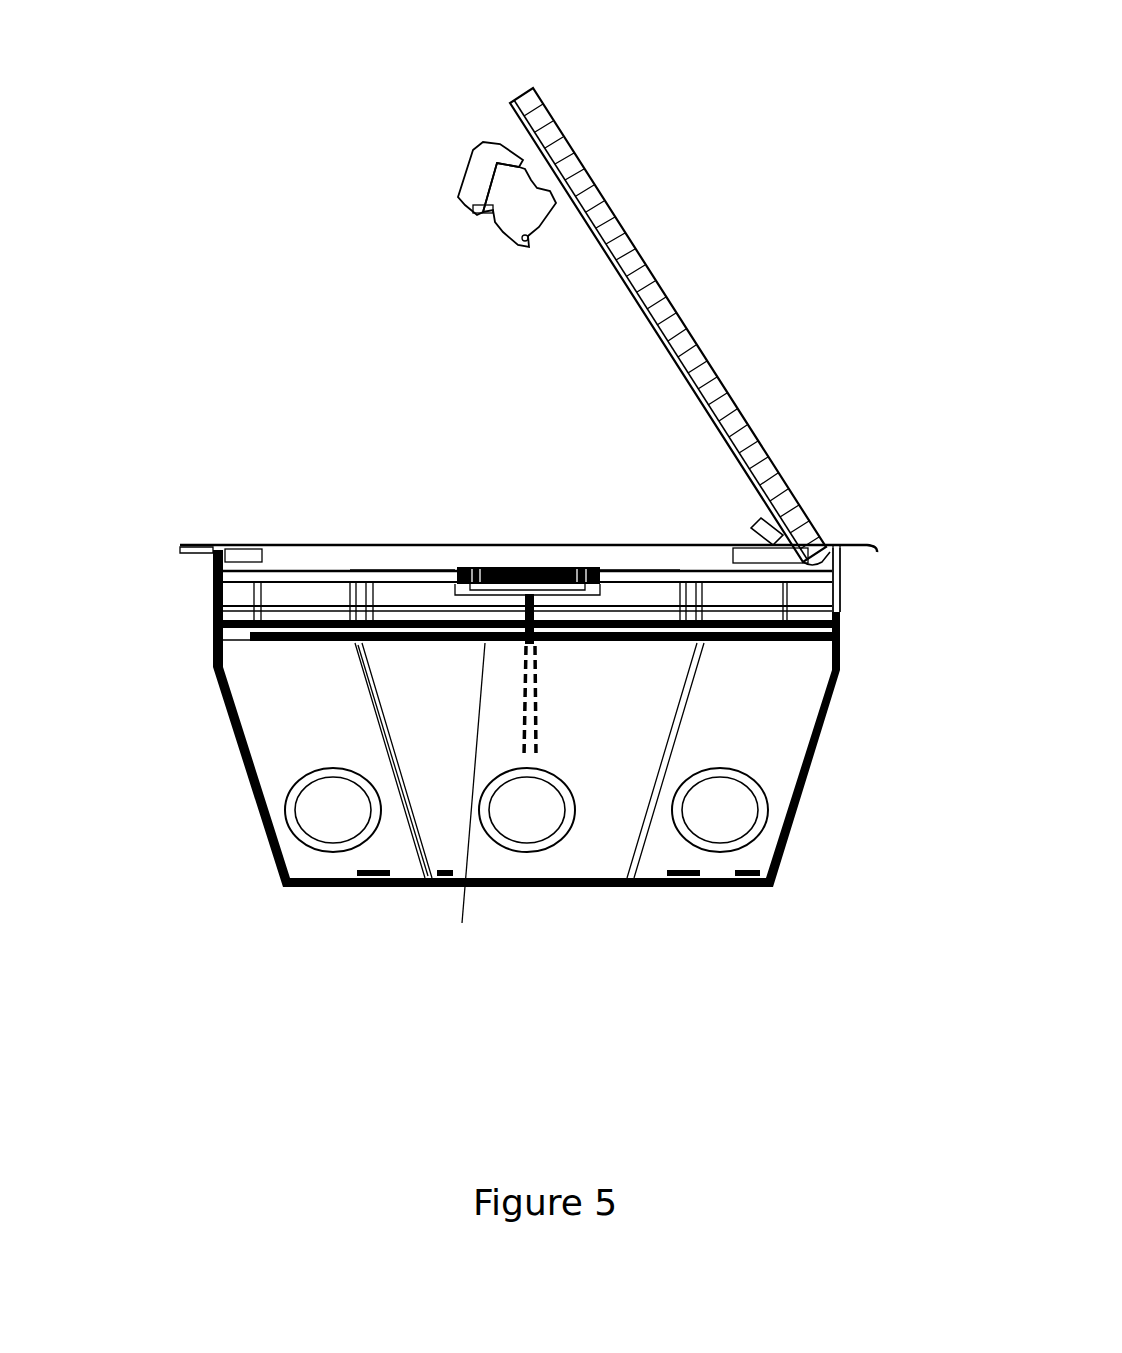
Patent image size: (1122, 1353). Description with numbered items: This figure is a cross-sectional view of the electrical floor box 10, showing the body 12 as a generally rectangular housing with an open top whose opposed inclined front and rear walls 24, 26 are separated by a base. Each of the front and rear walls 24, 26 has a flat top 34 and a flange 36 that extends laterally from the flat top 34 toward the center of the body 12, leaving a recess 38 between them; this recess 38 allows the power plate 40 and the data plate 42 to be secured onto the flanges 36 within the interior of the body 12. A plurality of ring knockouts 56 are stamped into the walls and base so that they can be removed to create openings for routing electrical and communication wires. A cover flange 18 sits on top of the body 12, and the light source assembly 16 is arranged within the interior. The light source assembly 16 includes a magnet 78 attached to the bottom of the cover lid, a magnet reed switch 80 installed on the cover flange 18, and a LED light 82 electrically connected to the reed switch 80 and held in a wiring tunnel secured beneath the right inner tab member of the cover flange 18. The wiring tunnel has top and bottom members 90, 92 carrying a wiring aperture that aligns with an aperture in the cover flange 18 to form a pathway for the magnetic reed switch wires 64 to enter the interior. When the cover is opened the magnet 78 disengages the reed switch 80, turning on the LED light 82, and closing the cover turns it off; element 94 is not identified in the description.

The electrical floor box 10 is at (722, 143).
The body 12 is at (770, 713).
The light source assembly 16 is at (463, 653).
The cover flange 18 is at (290, 554).
The front wall 24 is at (225, 725).
The rear wall 26 is at (810, 762).
The flat top 34 is at (215, 622).
The flange 36 is at (247, 645).
The recess 38 is at (812, 605).
The power plate 40 is at (660, 803).
The data plate 42 is at (403, 820).
The knockouts 56 is at (333, 830).
The magnetic reed switch wires 64 is at (533, 707).
The magnet 78 is at (563, 232).
The magnet reed switch 80 is at (500, 575).
The LED light 82 is at (455, 585).
The top member 90 is at (372, 582).
The bottom member 92 is at (463, 805).
The track 94 is at (600, 610).